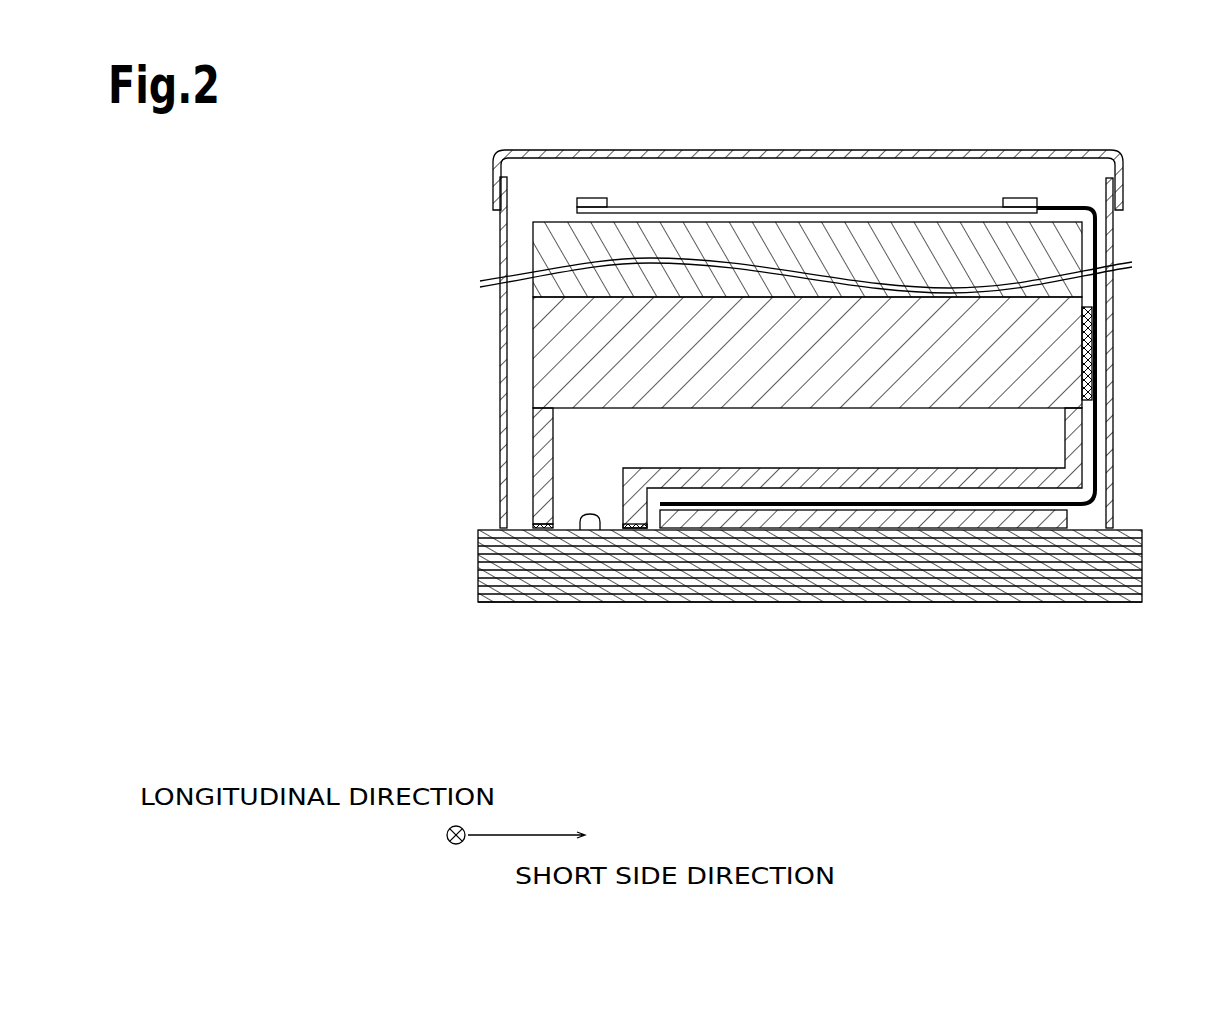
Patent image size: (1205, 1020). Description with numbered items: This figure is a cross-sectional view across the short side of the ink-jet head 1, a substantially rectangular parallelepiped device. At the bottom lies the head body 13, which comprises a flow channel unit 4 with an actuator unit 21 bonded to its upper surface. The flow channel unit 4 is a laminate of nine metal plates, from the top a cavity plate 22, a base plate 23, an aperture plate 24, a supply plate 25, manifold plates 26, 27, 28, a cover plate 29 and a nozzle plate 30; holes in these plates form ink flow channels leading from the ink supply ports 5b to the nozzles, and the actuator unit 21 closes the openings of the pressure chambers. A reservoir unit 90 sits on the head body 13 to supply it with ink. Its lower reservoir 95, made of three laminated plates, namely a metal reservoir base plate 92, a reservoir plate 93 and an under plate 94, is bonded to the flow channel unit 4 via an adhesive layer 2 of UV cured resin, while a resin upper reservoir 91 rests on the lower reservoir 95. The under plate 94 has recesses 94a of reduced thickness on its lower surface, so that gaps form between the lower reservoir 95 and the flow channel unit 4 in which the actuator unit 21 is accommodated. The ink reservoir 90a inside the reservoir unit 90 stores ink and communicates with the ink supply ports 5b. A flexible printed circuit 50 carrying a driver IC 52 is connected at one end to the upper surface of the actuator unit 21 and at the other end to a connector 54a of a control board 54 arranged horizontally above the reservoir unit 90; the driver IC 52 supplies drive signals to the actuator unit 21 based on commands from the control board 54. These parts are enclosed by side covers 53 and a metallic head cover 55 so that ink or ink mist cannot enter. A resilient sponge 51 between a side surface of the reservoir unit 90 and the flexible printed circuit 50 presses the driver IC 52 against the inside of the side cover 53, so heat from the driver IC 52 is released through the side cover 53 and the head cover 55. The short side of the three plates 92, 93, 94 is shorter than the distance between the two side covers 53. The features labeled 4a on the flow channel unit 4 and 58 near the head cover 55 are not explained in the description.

The ink-jet head 1 is at (978, 145).
The adhesive layer 2 is at (628, 530).
The flow channel unit 4 is at (398, 688).
The circuit board surface 4a is at (1060, 602).
The ink supply ports 5b is at (597, 530).
The head body 13 is at (362, 395).
The actuator unit 21 is at (687, 517).
The cavity plate 22 is at (476, 532).
The base plate 23 is at (476, 540).
The aperture plate 24 is at (476, 548).
The supply plate 25 is at (476, 556).
The manifold plate 26 is at (476, 564).
The manifold plate 27 is at (476, 572).
The manifold plate 28 is at (476, 580).
The cover plate 29 is at (476, 588).
The nozzle plate 30 is at (483, 602).
The flexible printed circuit 50 is at (1096, 417).
The sponge 51 is at (1118, 283).
The driver IC 52 is at (1093, 352).
The side cover 53 is at (500, 234).
The control board 54 is at (668, 207).
The connector 54a is at (1015, 200).
The head cover 55 is at (742, 150).
The gap 58 is at (1128, 188).
The reservoir unit 90 is at (410, 288).
The ink reservoir 90a is at (849, 447).
The upper reservoir 91 is at (553, 292).
The reservoir base plate 92 is at (553, 331).
The reservoir plate 93 is at (540, 475).
The under plate 94 is at (553, 478).
The recesses 94a is at (663, 525).
The lower reservoir 95 is at (452, 312).